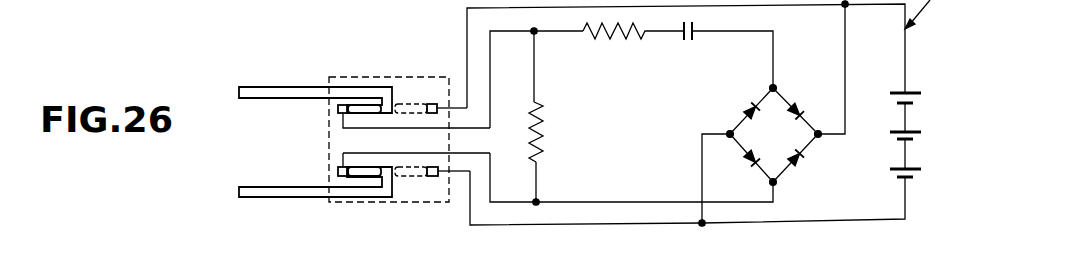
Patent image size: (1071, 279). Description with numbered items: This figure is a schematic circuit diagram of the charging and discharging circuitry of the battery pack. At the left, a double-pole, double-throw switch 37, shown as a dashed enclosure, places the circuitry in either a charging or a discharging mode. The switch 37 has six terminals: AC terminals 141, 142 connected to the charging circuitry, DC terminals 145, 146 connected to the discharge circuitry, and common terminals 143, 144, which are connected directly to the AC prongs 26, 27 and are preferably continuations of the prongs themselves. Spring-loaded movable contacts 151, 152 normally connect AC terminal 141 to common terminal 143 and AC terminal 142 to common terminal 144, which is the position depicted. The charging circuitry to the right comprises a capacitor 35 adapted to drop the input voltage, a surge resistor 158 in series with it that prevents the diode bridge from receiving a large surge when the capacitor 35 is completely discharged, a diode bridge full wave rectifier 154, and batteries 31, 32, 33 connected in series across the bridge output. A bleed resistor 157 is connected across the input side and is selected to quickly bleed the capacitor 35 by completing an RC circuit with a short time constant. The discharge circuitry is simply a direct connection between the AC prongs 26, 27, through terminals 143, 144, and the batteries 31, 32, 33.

The AC prong 26 is at (290, 86).
The AC prong 27 is at (258, 197).
The double-pole, double-throw switch 37 is at (373, 76).
The AC terminal 141 is at (338, 110).
The AC terminal 142 is at (338, 177).
The common terminal 143 is at (393, 103).
The common terminal 144 is at (388, 183).
The DC terminal 145 is at (436, 101).
The DC terminal 146 is at (432, 178).
The movable contact 151 is at (345, 116).
The movable contact 152 is at (343, 153).
The surge resistor 158 is at (612, 38).
The capacitor 35 is at (695, 38).
The bleed resistor 157 is at (537, 153).
The diode bridge full wave rectifier 154 is at (766, 92).
The battery 31 is at (914, 92).
The battery 32 is at (913, 130).
The battery 33 is at (913, 168).